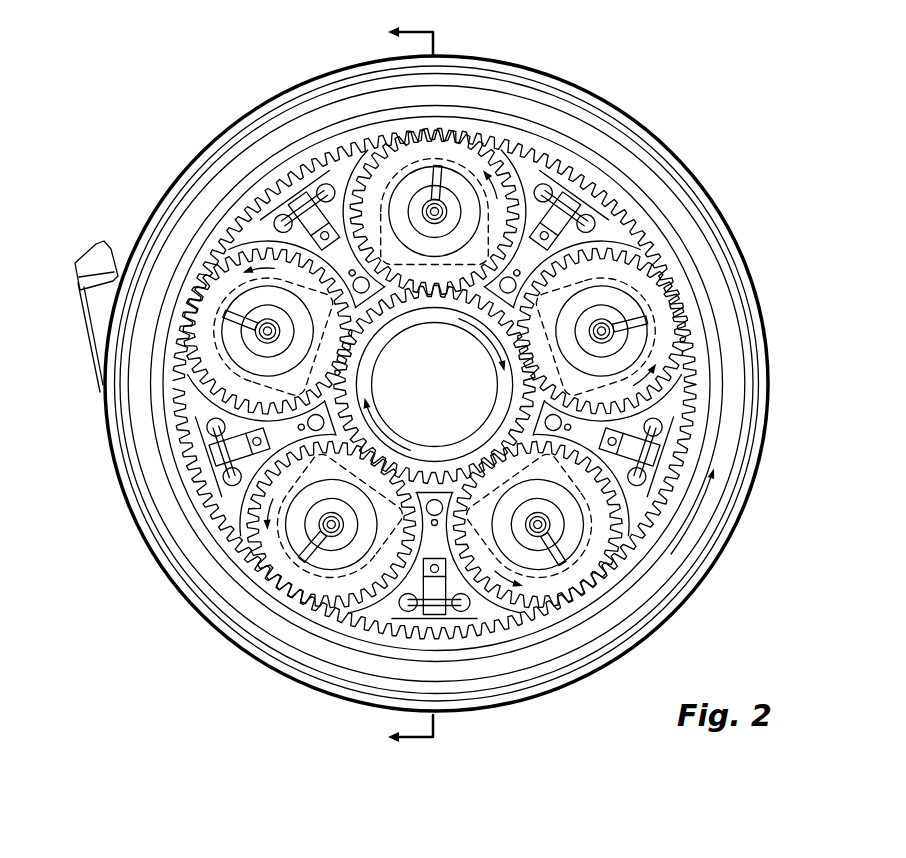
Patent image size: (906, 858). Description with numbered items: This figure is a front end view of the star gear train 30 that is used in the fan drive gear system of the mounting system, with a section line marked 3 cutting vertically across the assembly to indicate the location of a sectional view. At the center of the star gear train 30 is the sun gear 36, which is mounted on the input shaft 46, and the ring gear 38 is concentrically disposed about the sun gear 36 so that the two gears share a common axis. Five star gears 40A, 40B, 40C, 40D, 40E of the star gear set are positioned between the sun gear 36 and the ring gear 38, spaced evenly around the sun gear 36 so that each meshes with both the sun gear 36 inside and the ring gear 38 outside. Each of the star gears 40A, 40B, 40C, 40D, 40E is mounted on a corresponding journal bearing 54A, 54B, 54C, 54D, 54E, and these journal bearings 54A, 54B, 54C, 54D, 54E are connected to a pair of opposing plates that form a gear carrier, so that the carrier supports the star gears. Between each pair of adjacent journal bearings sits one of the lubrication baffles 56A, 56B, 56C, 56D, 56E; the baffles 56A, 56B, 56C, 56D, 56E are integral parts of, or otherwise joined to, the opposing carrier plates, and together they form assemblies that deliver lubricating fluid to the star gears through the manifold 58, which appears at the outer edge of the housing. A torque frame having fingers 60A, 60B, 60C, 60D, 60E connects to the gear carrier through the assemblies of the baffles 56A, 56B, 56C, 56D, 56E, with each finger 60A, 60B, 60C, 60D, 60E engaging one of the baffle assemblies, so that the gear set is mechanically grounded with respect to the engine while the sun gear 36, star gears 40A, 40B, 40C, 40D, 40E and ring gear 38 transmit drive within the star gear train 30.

The section line for FIG. 3 is at (410, 386).
The star gear train 30 is at (190, 128).
The sun gear 36 is at (368, 428).
The ring gear 38 is at (752, 352).
The star gear 40A is at (462, 138).
The star gear 40B is at (648, 262).
The star gear 40C is at (590, 590).
The star gear 40D is at (274, 584).
The star gear 40E is at (230, 395).
The input shaft 46 is at (500, 406).
The journal bearing 54A is at (420, 175).
The journal bearing 54B is at (640, 316).
The journal bearing 54C is at (577, 553).
The journal bearing 54D is at (320, 566).
The journal bearing 54E is at (230, 345).
The lubrication baffle 56A is at (560, 168).
The lubrication baffle 56B is at (683, 433).
The lubrication baffle 56C is at (413, 622).
The lubrication baffle 56D is at (222, 490).
The lubrication baffle 56E is at (333, 172).
The manifold 58 is at (86, 332).
The finger 60A is at (570, 198).
The finger 60B is at (637, 478).
The finger 60C is at (460, 607).
The finger 60D is at (231, 476).
The finger 60E is at (285, 220).